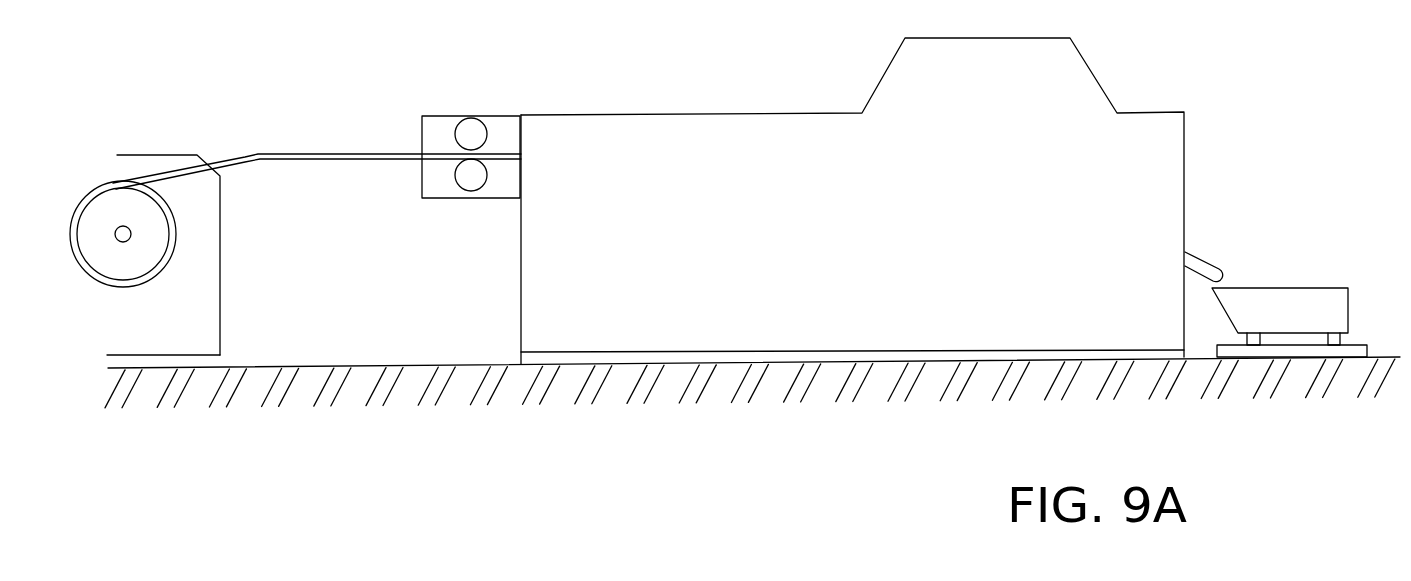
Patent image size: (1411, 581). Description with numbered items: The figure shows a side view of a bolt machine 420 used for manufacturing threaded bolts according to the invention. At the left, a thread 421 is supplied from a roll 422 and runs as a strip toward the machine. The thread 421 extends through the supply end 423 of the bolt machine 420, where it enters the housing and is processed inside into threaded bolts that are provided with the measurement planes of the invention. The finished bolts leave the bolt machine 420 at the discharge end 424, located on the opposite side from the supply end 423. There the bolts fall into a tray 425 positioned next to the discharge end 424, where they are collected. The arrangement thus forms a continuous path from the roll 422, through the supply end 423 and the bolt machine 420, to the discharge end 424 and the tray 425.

The bolt machine 420 is at (703, 102).
The thread 421 is at (343, 156).
The roll 422 is at (146, 213).
The supply end 423 is at (441, 125).
The discharge end 424 is at (1208, 260).
The tray 425 is at (1340, 311).